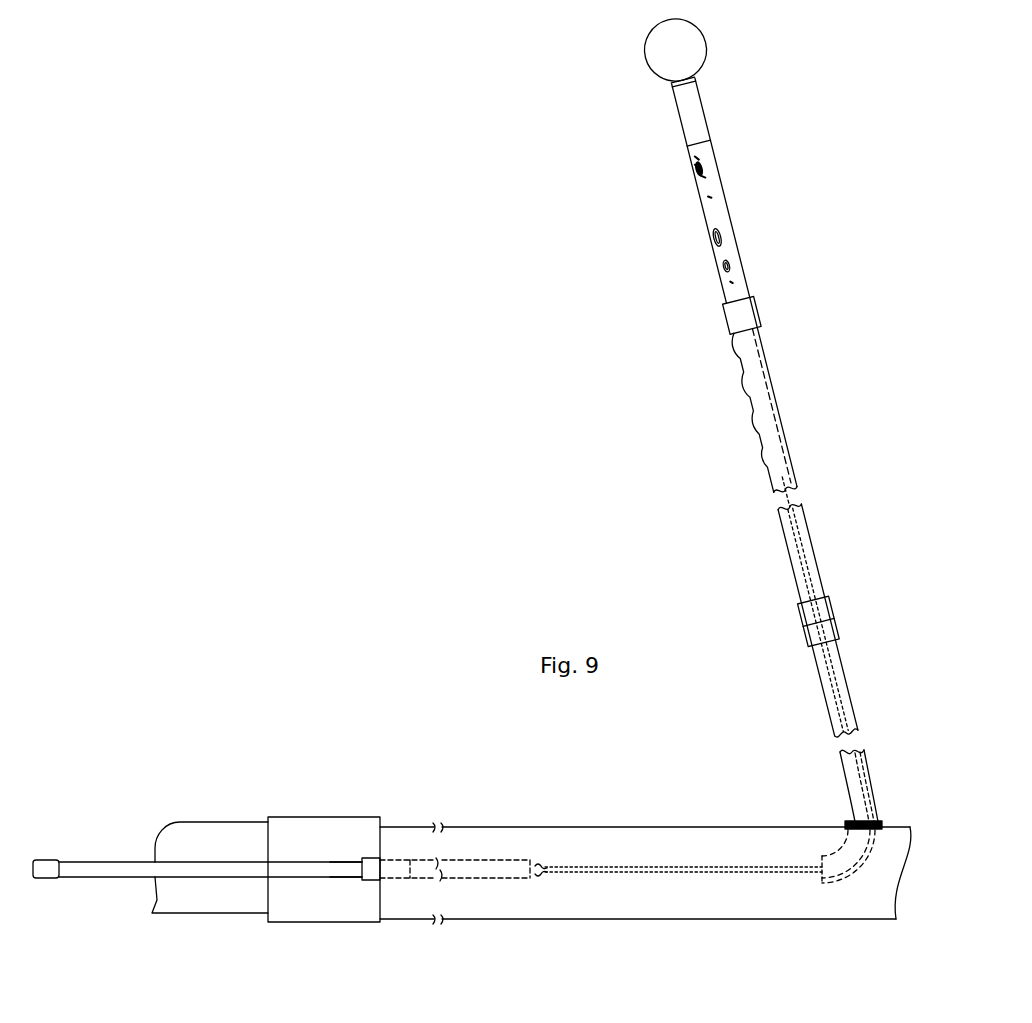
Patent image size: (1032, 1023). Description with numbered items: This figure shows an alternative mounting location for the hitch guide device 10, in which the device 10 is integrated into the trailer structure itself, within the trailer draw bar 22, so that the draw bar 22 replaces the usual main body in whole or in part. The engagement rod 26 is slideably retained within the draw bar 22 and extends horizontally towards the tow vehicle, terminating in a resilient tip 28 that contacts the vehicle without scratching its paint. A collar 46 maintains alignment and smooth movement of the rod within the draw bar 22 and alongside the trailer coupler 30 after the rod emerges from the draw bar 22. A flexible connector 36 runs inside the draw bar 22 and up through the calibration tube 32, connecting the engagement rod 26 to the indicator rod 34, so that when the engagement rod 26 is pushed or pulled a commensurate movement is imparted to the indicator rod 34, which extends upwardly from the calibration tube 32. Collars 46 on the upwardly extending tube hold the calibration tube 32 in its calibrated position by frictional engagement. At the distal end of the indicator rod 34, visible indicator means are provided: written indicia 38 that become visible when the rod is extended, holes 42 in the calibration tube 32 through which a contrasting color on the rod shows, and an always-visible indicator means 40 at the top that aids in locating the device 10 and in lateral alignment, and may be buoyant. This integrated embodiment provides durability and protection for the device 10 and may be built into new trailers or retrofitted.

The hitch guide 10 is at (584, 318).
The trailer draw bar 22 is at (568, 902).
The engagement rod 26 is at (355, 859).
The tip 28 is at (334, 864).
The trailer coupler 30 is at (293, 907).
The calibration tube 32 is at (772, 482).
The indicator rod 34 is at (689, 133).
The flexible connector 36 is at (770, 868).
The written indicia 38 is at (698, 207).
The indicator means 40 is at (657, 62).
The holes 42 is at (738, 385).
The collar 46 is at (736, 318).